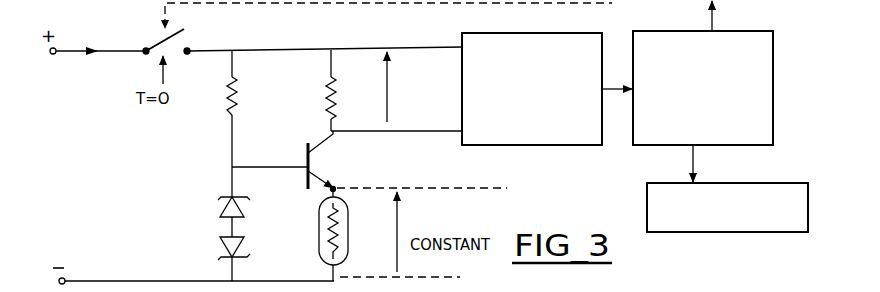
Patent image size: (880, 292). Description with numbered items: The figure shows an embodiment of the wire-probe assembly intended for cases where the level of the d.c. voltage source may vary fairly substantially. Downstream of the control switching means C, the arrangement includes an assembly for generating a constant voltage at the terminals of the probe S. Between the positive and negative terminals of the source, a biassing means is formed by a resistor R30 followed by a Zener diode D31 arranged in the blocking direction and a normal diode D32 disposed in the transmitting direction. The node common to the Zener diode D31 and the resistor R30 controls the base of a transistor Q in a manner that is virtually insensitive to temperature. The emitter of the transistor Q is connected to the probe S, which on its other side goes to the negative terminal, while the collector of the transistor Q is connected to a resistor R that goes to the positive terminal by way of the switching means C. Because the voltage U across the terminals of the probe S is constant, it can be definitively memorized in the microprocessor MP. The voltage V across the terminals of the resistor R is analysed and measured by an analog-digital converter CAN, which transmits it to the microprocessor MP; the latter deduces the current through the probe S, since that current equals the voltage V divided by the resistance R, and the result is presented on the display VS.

The control switching means C is at (152, 45).
The resistor R30 is at (214, 123).
The resistor R is at (319, 90).
The voltage across the terminals of the resistor R V is at (375, 87).
The transistor Q is at (306, 160).
The constant voltage U is at (387, 232).
The probe S is at (319, 253).
The Zener diode D31 is at (216, 203).
The normal diode D32 is at (216, 252).
The analog-digital converter CAN is at (492, 33).
The microprocessor MP is at (658, 31).
The display VS is at (750, 183).